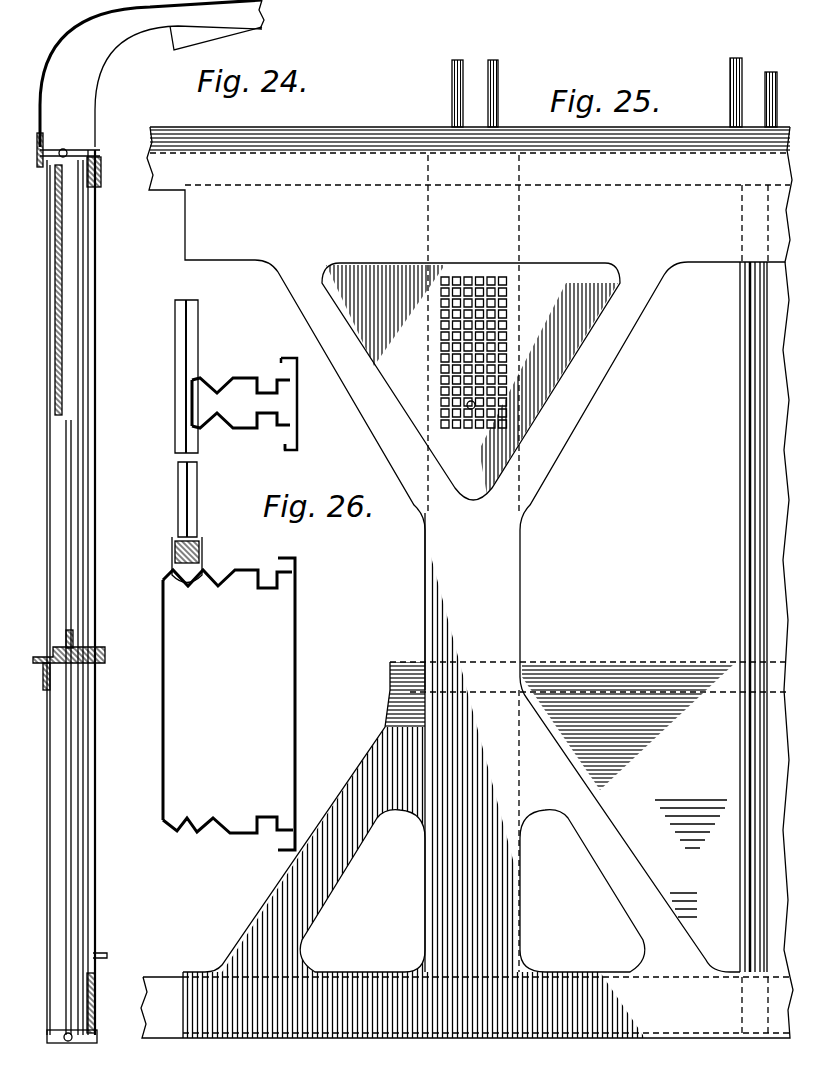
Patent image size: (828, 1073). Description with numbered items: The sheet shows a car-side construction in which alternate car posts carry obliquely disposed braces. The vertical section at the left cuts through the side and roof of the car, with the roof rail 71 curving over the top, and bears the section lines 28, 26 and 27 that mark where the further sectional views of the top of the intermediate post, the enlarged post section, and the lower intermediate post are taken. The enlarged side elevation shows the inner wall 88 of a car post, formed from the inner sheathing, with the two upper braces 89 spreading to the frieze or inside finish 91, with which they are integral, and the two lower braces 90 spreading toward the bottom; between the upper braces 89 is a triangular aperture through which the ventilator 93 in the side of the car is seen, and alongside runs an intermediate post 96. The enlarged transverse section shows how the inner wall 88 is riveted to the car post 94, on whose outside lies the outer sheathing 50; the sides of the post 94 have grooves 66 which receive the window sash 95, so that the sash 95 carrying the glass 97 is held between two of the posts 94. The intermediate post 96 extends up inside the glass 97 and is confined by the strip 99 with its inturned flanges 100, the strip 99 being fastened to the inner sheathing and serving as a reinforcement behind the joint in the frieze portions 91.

In FIG. 24, the curved roof rail 71 is at (95, 38).
In FIG. 24, the section line 28— 28 is at (108, 203).
In FIG. 24, the section line 26— 26 is at (108, 340).
In FIG. 24, the section line 27— 27 is at (110, 778).
In FIG. 24, the frieze or inside finish 91 is at (97, 231).
In FIG. 25, the frieze or inside finish 91 is at (469, 160).
In FIG. 24, the glass 97 is at (66, 553).
In FIG. 26, the glass 97 is at (184, 372).
In FIG. 24, the window sash 95 is at (66, 637).
In FIG. 26, the window sash 95 is at (174, 548).
In FIG. 24, the outer sheathing 50 is at (47, 877).
In FIG. 25, the upper braces 89 is at (471, 422).
In FIG. 25, the ventilator 93 is at (505, 298).
In FIG. 26, the inner wall of car post 88 is at (300, 657).
In FIG. 25, the inner wall of car post 88 is at (472, 742).
In FIG. 25, the lower braces 90 is at (486, 850).
In FIG. 26, the intermediate post 96 is at (226, 427).
In FIG. 25, the intermediate post 96 is at (745, 738).
In FIG. 26, the strip 99 is at (298, 404).
In FIG. 26, the inturned flanges 100 is at (282, 358).
In FIG. 26, the car post 94 is at (227, 695).
In FIG. 26, the grooves 66 is at (212, 826).